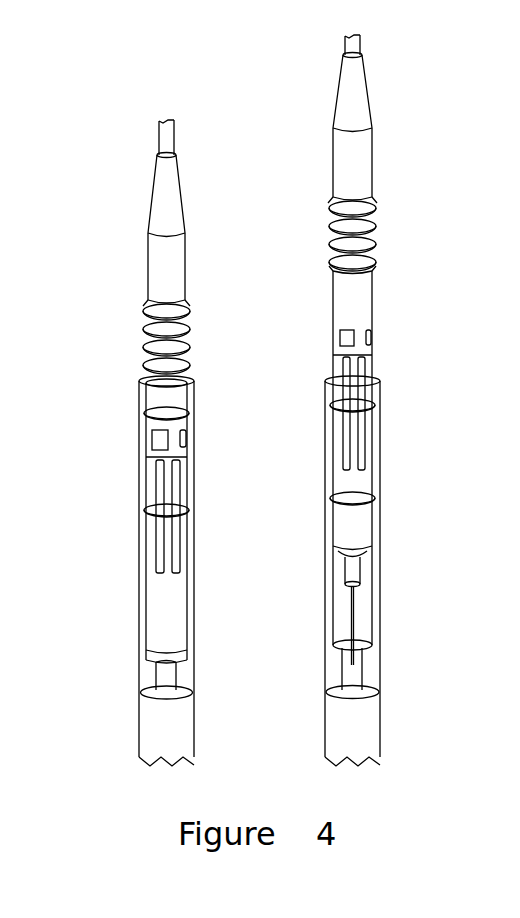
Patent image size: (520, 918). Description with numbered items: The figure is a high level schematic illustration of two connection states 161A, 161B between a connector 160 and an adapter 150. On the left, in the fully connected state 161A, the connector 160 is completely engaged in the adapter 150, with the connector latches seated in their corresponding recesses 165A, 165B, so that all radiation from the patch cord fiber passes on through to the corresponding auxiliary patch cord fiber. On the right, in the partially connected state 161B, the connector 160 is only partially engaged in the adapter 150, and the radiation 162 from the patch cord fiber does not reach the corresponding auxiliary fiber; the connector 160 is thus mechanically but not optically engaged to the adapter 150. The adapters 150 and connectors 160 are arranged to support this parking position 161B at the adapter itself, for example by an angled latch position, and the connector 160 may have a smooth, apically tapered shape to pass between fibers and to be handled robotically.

The adapter 150 is at (139, 731).
The connector 160 is at (146, 307).
The fully connected state 161A is at (143, 92).
The partially connected state 161B is at (322, 92).
The radiation 162 is at (352, 620).
The recess 165A is at (381, 487).
The recess 165B is at (381, 406).